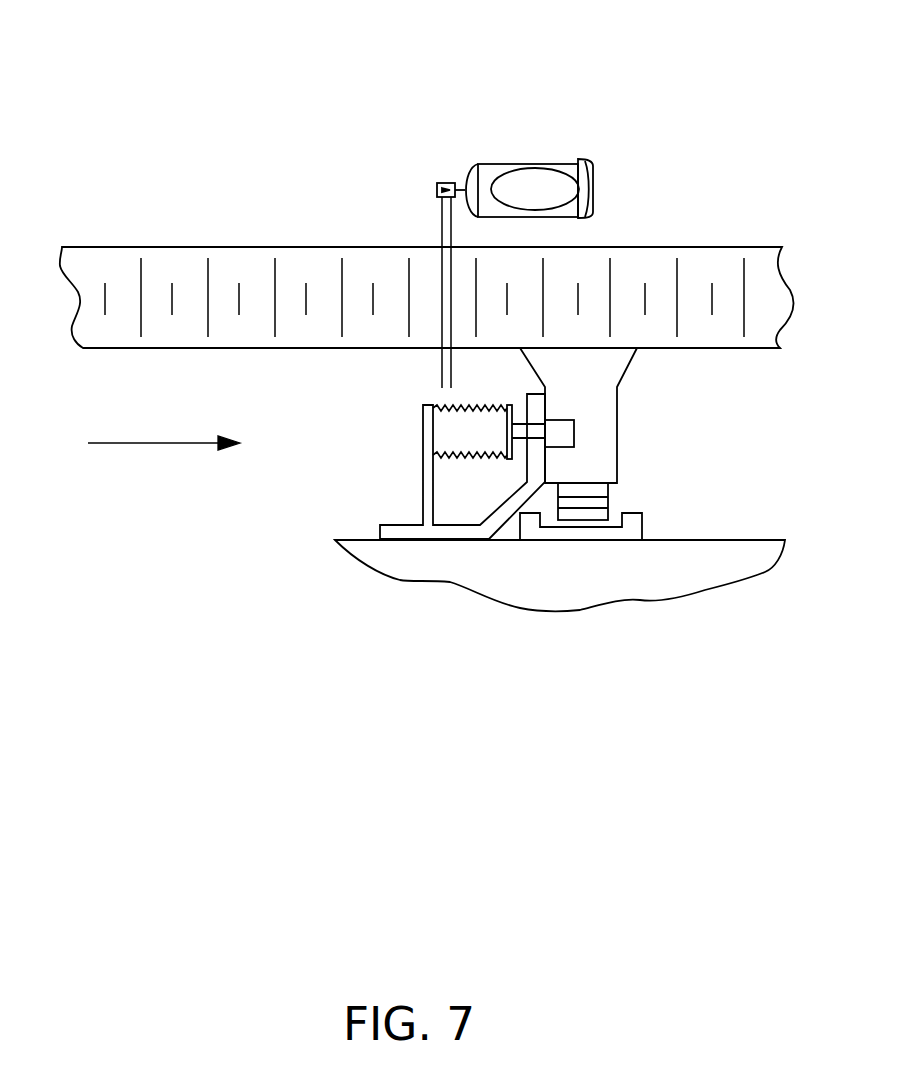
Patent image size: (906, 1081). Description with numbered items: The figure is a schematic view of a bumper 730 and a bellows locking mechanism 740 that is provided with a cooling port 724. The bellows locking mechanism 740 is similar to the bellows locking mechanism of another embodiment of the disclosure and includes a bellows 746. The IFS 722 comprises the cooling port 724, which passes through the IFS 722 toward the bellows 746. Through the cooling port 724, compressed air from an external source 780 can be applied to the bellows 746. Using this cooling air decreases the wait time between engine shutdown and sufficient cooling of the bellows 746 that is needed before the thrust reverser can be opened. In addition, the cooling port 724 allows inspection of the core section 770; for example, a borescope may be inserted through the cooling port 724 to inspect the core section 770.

The IFS 722 is at (665, 248).
The cooling port 724 is at (440, 322).
The bumper 730 is at (617, 417).
The bellows locking mechanism 740 is at (406, 542).
The bellows 746 is at (465, 456).
The core section 770 is at (145, 443).
The external source 780 is at (528, 165).